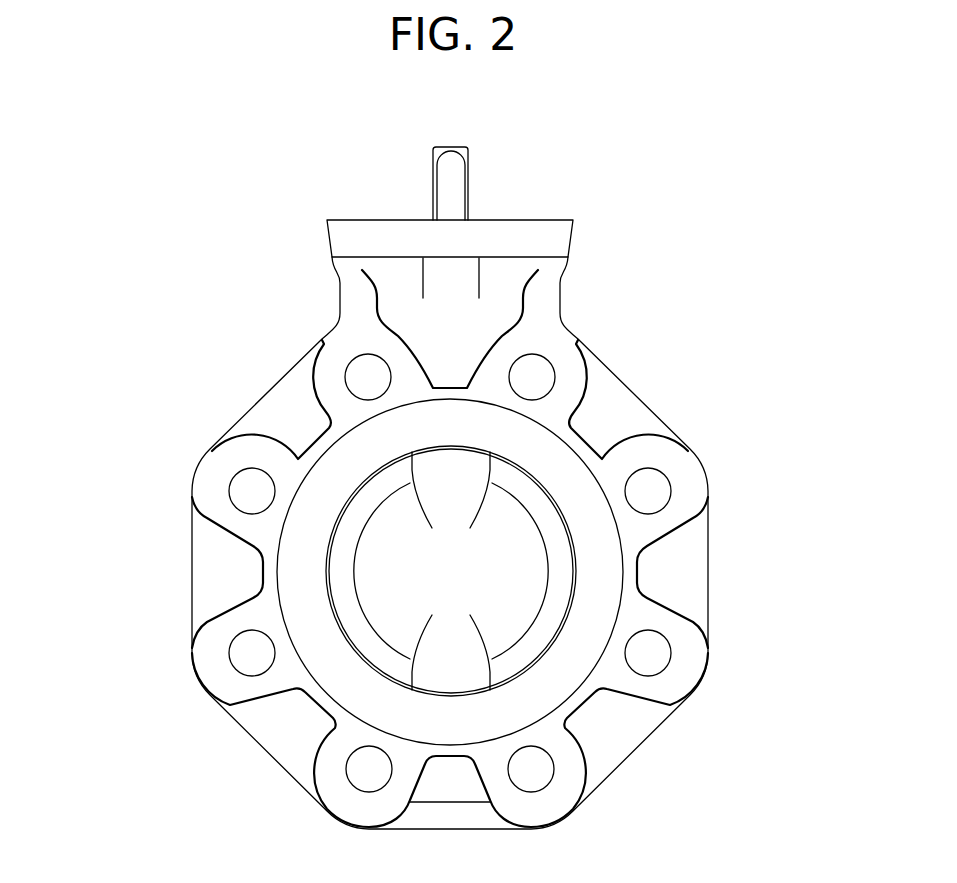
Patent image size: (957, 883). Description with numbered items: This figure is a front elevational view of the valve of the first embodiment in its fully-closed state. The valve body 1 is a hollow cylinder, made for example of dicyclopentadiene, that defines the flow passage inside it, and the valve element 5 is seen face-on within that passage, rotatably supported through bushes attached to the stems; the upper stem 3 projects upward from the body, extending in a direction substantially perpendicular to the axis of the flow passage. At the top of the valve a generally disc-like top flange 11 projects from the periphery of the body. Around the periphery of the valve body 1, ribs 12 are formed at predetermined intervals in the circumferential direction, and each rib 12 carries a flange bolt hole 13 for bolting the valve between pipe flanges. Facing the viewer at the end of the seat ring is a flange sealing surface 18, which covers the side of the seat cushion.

The valve body 1 is at (290, 415).
The upper stem 3 is at (445, 176).
The valve element 5 is at (242, 582).
The top flange 11 is at (533, 240).
The rib 12 is at (653, 455).
The flange bolt hole 13 is at (650, 497).
The flange sealing surface 18 is at (603, 602).